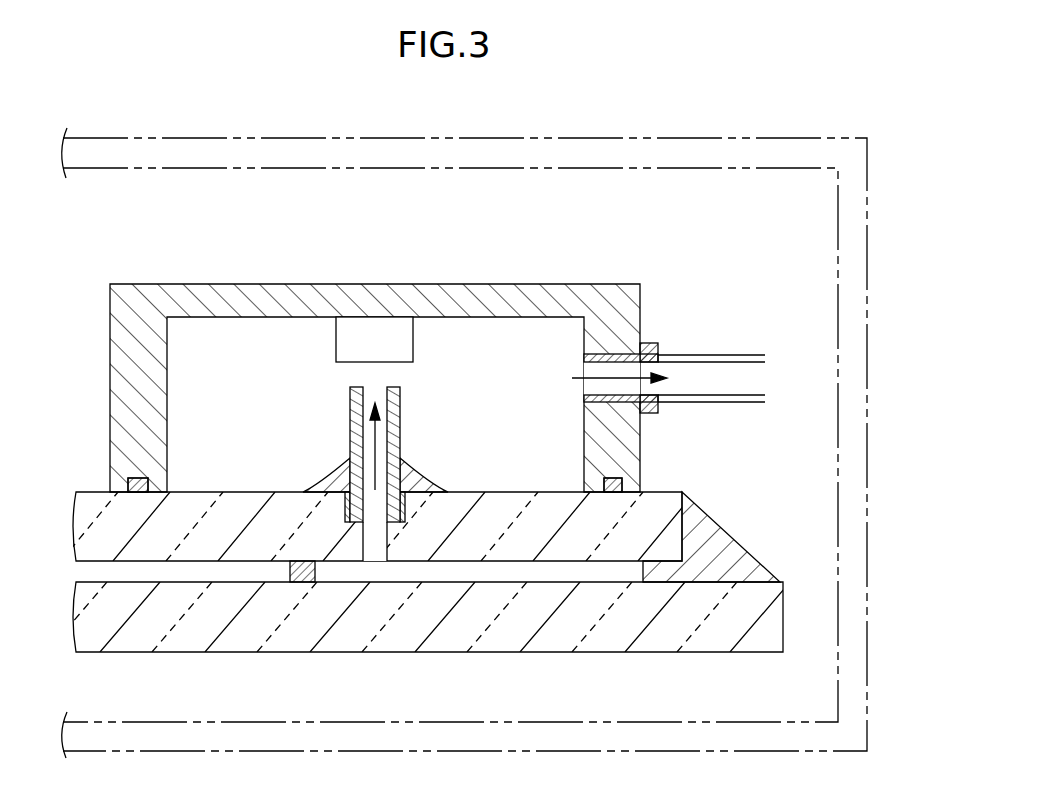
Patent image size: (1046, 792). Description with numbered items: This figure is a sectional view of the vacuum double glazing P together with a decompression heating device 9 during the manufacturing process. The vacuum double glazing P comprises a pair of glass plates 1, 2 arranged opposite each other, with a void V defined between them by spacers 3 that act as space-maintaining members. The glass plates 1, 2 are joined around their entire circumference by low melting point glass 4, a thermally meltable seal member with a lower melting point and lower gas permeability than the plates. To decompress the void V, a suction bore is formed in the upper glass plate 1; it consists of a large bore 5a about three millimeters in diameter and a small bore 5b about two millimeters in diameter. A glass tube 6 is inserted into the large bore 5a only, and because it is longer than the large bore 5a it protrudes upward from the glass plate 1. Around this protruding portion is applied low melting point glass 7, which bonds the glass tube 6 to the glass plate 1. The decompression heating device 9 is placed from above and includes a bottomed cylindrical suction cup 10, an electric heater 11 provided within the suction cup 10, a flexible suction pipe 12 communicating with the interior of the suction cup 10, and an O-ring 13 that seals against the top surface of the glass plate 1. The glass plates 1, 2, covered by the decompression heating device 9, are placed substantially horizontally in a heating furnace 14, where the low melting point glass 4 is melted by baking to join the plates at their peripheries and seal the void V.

The glass plate 1 is at (543, 510).
The glass plate 2 is at (558, 642).
The spacer 3 is at (300, 582).
The low melting point glass 4 is at (723, 533).
The large bore 5a is at (363, 530).
The small bore 5b is at (384, 538).
The glass tube 6 is at (400, 422).
The low melting point glass 7 is at (322, 480).
The decompression heating device 9 is at (375, 350).
The suction cup 10 is at (277, 295).
The electric heater 11 is at (348, 342).
The suction pipe 12 is at (715, 357).
The O-ring 13 is at (612, 478).
The heating furnace 14 is at (458, 136).
The vacuum double glazing P is at (192, 657).
The void V is at (410, 573).